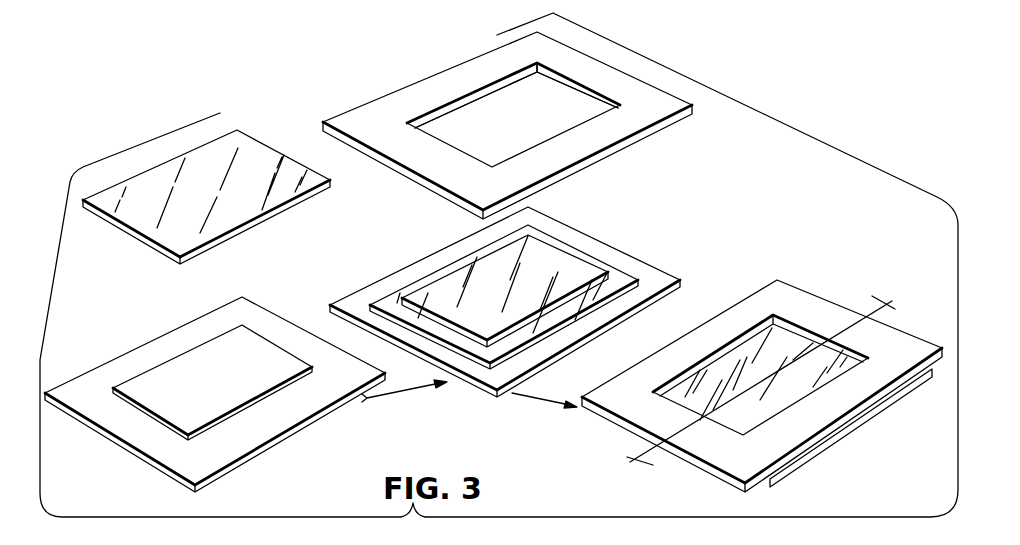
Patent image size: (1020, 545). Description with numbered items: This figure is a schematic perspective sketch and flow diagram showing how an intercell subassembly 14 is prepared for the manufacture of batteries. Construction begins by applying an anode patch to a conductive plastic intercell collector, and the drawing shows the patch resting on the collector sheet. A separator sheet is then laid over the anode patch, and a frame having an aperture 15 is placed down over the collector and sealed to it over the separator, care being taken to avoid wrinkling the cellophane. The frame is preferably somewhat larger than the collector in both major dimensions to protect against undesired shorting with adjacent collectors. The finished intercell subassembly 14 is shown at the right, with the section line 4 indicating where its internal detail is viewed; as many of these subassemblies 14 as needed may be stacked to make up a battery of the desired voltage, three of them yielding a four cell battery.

The intercell subassembly 14 is at (762, 374).
The aperture 15 is at (590, 93).
The section line 4- 4 is at (866, 294).